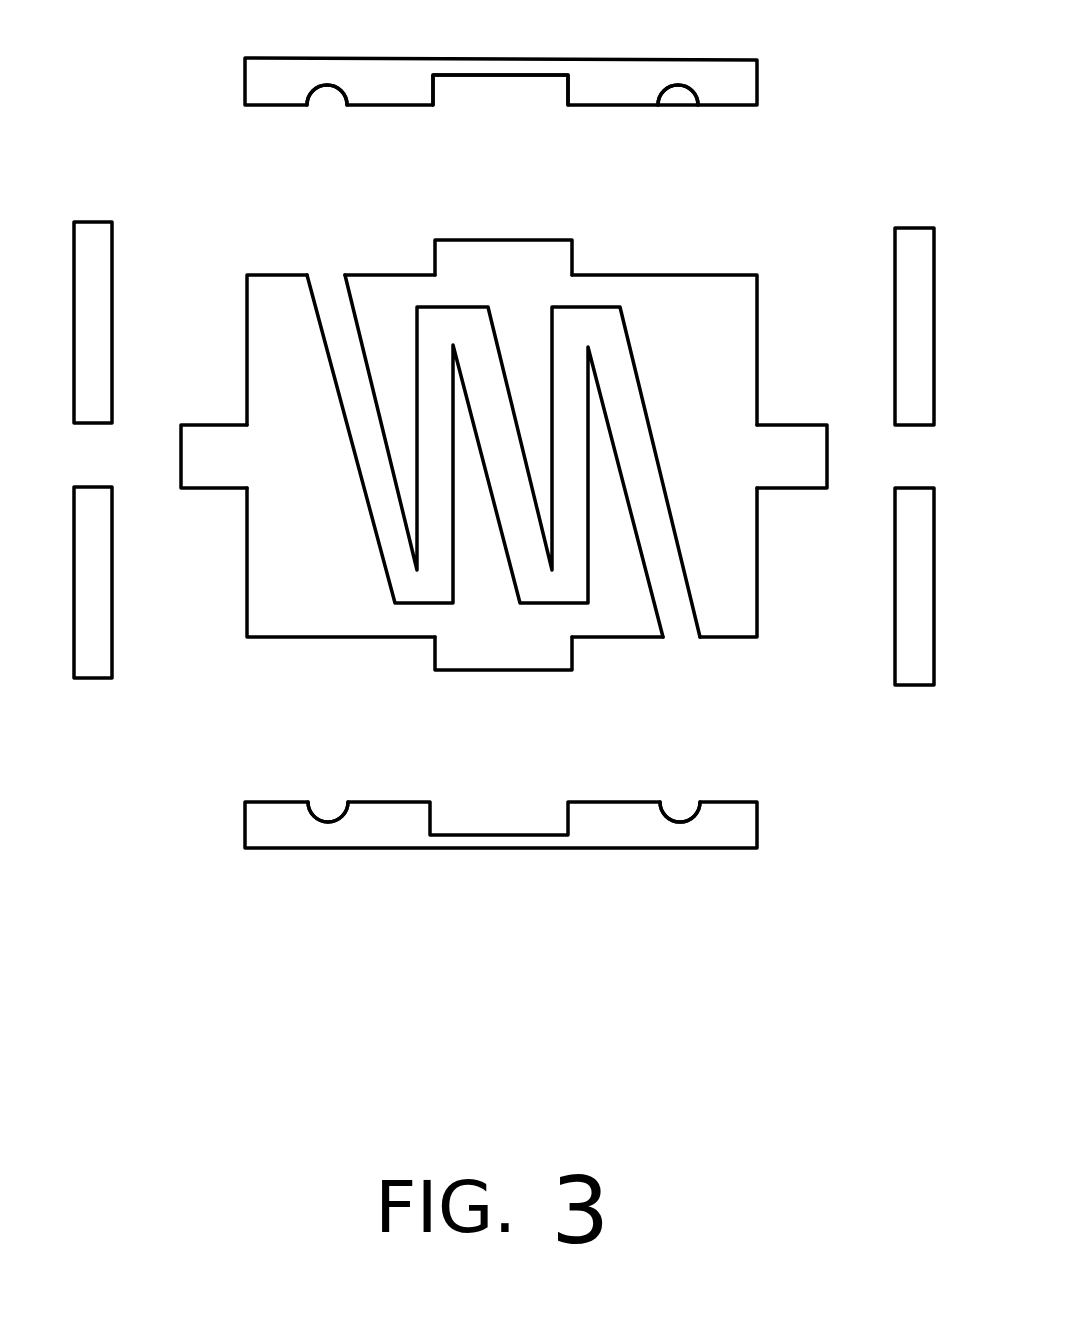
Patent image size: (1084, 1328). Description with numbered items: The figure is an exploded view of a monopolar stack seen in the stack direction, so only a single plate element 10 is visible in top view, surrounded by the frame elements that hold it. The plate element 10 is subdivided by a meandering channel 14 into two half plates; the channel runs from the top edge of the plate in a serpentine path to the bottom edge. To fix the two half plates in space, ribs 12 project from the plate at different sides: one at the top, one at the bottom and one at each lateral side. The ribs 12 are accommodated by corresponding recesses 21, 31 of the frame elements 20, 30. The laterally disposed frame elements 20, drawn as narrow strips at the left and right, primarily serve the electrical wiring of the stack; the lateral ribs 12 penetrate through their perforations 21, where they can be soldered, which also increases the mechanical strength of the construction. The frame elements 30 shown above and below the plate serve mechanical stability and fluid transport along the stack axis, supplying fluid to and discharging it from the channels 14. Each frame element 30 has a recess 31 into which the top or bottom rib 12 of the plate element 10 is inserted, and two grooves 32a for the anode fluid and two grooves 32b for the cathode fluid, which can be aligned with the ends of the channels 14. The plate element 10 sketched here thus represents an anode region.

The plate element 10 is at (702, 258).
The ribs 12 is at (509, 235).
The meandering channel 14 is at (331, 282).
The frame element 20 is at (915, 216).
The recesses (perforations) 21 is at (915, 566).
The frame element 30 is at (531, 40).
The recesses 31 is at (500, 94).
The grooves (for the anodes) 32a is at (327, 102).
The grooves (for the cathodes) 32b is at (677, 106).